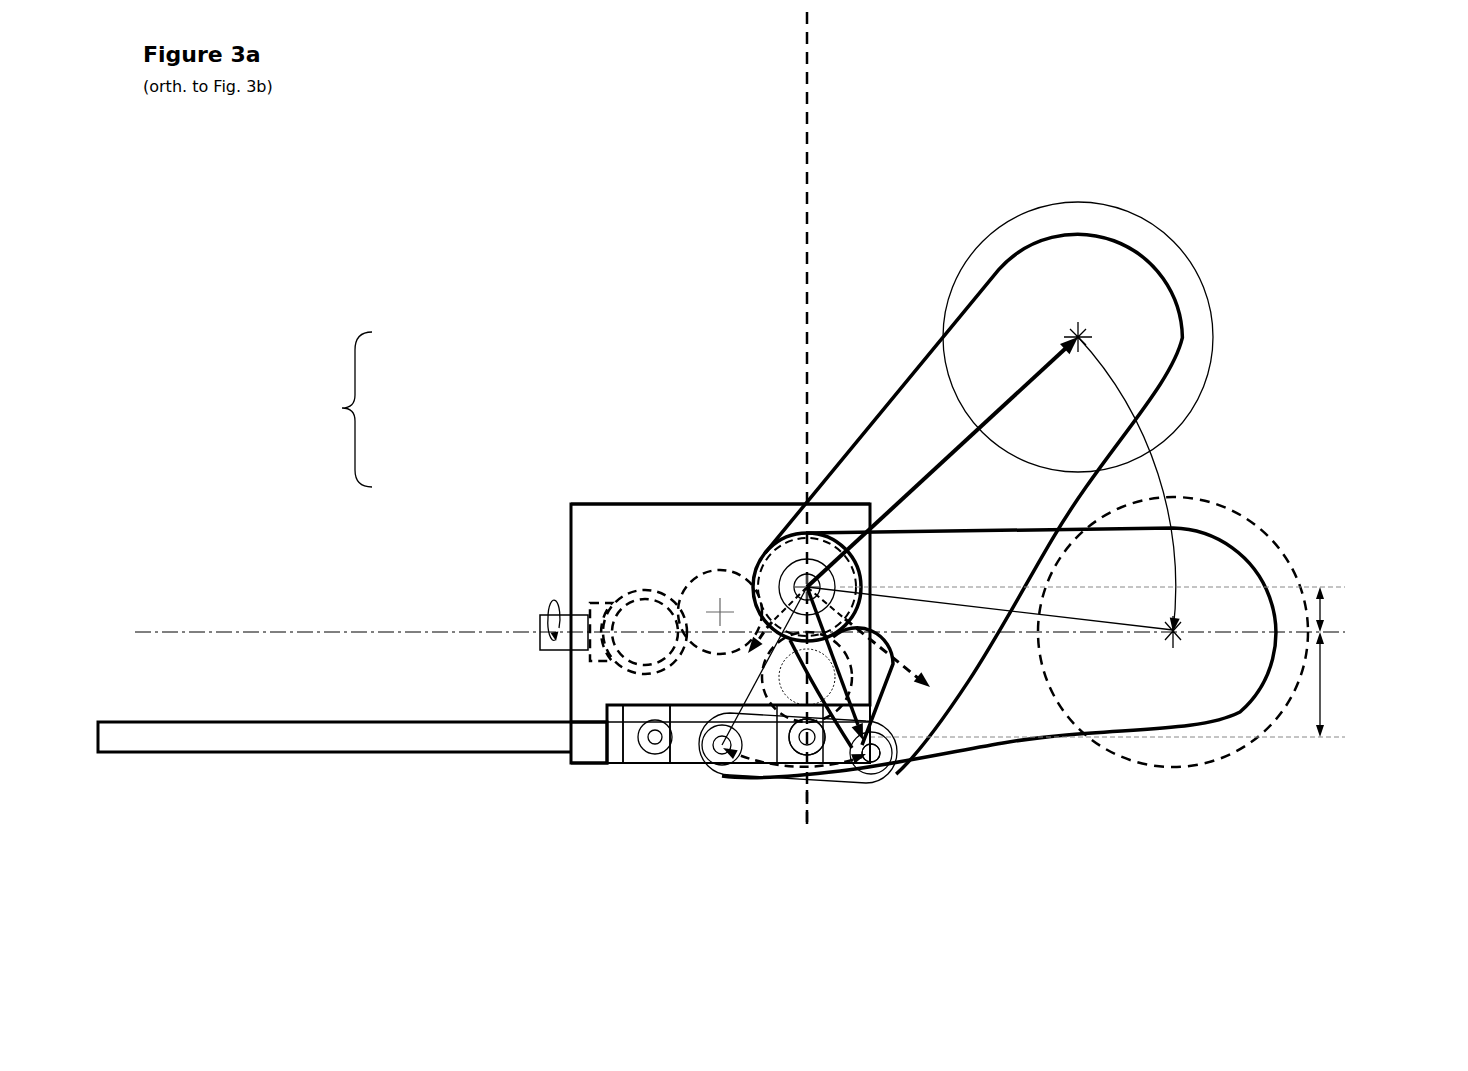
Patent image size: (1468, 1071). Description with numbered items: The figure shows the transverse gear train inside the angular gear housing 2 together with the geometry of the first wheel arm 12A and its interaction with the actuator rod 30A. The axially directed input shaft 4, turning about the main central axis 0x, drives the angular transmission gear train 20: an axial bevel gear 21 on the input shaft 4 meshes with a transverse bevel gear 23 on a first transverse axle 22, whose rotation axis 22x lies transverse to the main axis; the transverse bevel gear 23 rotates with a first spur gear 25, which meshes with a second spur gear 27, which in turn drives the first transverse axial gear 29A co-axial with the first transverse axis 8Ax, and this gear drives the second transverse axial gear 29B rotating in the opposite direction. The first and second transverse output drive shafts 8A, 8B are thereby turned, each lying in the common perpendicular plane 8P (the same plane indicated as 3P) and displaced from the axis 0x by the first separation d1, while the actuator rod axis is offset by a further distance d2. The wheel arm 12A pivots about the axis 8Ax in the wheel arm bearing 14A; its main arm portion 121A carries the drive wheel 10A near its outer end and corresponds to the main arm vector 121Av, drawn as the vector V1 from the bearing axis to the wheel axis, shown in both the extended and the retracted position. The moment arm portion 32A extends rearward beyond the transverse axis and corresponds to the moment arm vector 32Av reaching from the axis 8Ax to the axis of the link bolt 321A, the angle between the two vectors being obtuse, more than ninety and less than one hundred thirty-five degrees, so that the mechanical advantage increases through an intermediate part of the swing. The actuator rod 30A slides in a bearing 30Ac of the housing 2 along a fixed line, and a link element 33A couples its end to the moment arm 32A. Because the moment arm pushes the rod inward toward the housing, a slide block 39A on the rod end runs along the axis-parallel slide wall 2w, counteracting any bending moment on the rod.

The angular gear housing 2 is at (571, 587).
The input shaft 4 is at (540, 615).
The angular transmission gear train 20 is at (532, 503).
The axial bevel gear 21 is at (597, 600).
The transverse bevel gear 23 is at (643, 598).
The first spur gear 25 is at (663, 603).
The second spur gear 27 is at (710, 568).
The first transverse axial gear 29A is at (773, 545).
The second transverse axial gear 29B is at (852, 674).
The first transverse output drive shaft 8A is at (840, 543).
The first transverse axis 8Ax is at (812, 585).
The second transverse output drive shaft 8B is at (851, 676).
The first transverse-axial wheel arm bearing 14A is at (852, 575).
The main arm portion 121A is at (893, 390).
The main arm vector 121Av is at (1265, 437).
The first drive wheel 10A is at (1085, 202).
The arm vector V1 is at (945, 459).
The moment arm portion 32A is at (1128, 808).
The moment arm vector 32Av is at (990, 608).
The link bolt 321A is at (871, 753).
The link element 33A is at (990, 829).
The slide block 39A is at (798, 750).
The first wheel arm 12A is at (798, 748).
The actuator rod 30A is at (412, 753).
The bearing 30Ac is at (590, 762).
The first transverse axle 22 is at (645, 632).
The bracket axis 22x is at (646, 734).
The slide wall 2w is at (700, 708).
The plane 3P is at (990, 117).
The common perpendicular plane 8P is at (808, 803).
The main central axis 0x is at (740, 620).
The first separation d1 is at (1123, 609).
The distance d2 is at (1159, 684).